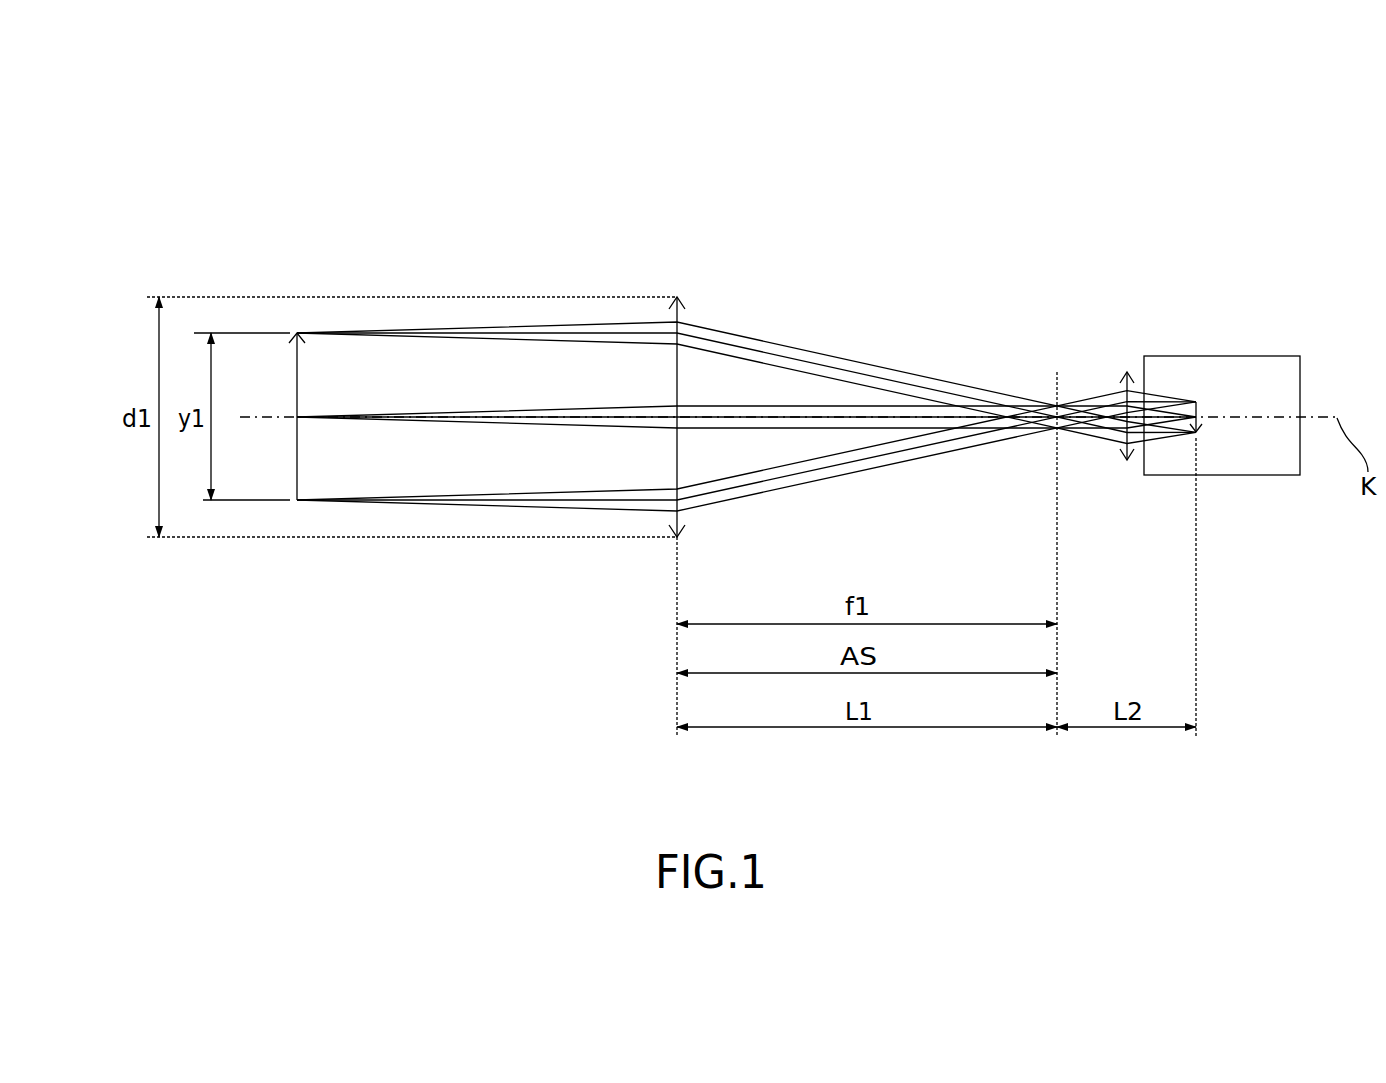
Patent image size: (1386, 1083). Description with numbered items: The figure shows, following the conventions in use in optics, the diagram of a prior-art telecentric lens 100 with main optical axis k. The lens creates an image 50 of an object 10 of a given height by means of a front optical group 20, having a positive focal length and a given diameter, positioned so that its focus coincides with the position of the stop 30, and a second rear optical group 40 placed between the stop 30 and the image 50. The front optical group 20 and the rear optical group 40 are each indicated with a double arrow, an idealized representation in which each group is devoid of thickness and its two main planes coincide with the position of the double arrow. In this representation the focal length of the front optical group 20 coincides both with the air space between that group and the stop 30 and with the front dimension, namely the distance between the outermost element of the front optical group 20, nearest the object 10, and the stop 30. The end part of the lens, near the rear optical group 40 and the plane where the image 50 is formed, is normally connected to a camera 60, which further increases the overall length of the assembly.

The telecentric lens 100 is at (560, 150).
The object 10 is at (297, 380).
The front optical group 20 is at (680, 315).
The stop 30 is at (1057, 373).
The rear optical group 40 is at (1127, 372).
The image 50 is at (1197, 402).
The camera 60 is at (1297, 356).